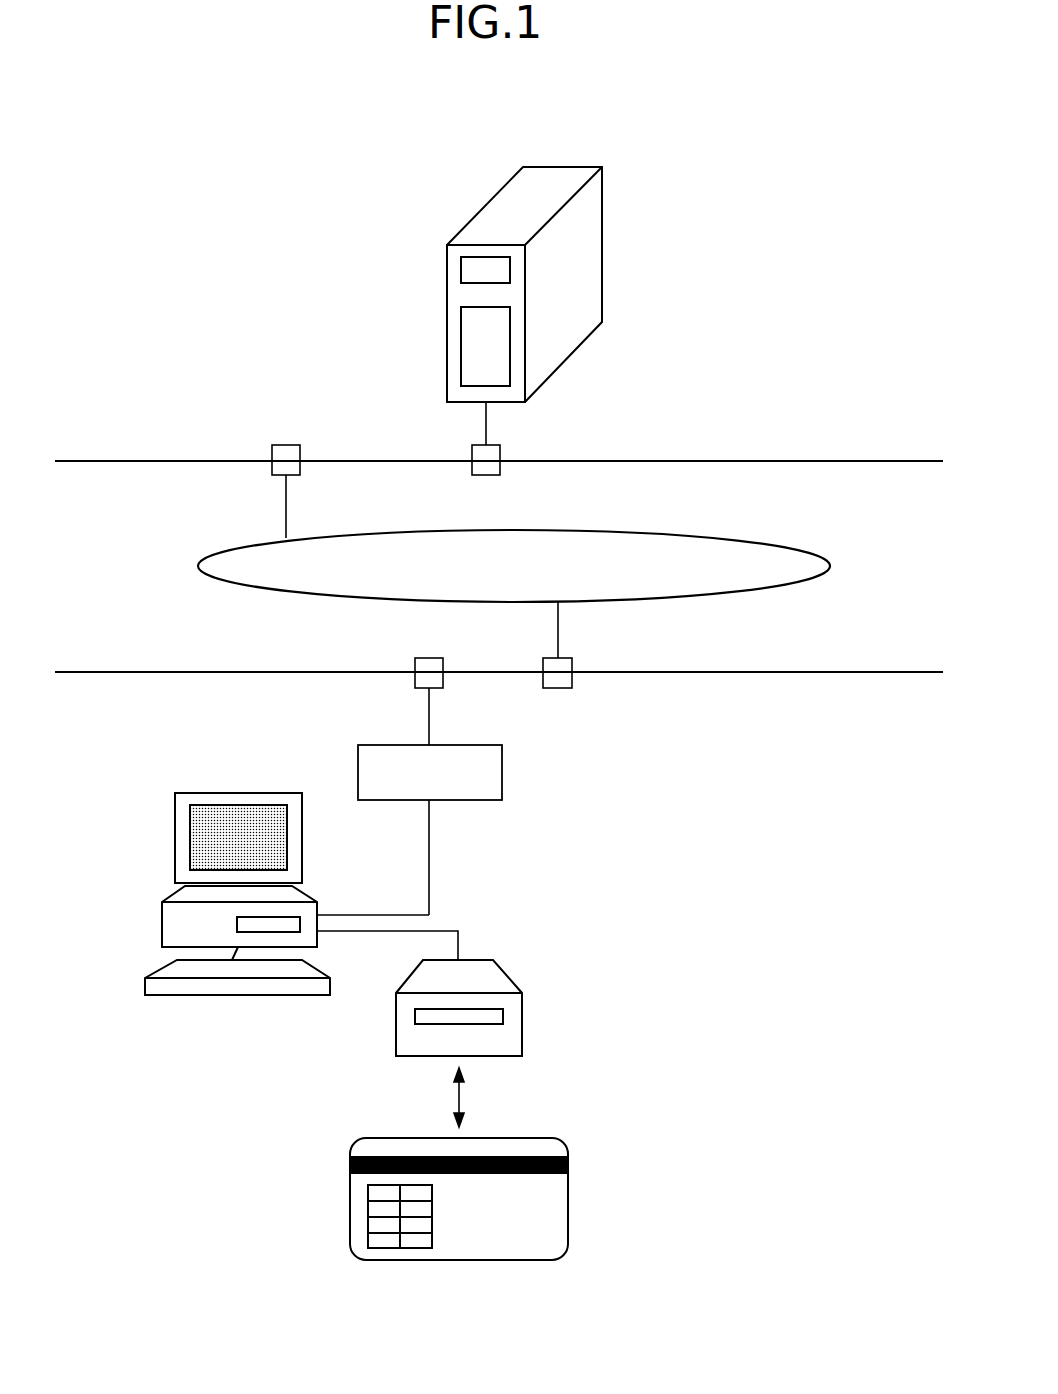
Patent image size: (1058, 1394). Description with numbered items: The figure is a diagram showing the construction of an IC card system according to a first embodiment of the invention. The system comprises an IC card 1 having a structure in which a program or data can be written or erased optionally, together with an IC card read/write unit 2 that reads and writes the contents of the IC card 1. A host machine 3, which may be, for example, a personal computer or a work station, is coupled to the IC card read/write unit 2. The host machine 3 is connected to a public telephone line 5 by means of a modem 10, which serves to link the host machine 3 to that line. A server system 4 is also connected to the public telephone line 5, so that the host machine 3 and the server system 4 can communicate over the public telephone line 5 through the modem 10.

The IC card 1 is at (350, 1198).
The IC card read/write unit 2 is at (522, 1033).
The host machine 3 is at (162, 923).
The server system 4 is at (478, 215).
The public telephone line 5 is at (830, 566).
The modem 10 is at (502, 777).